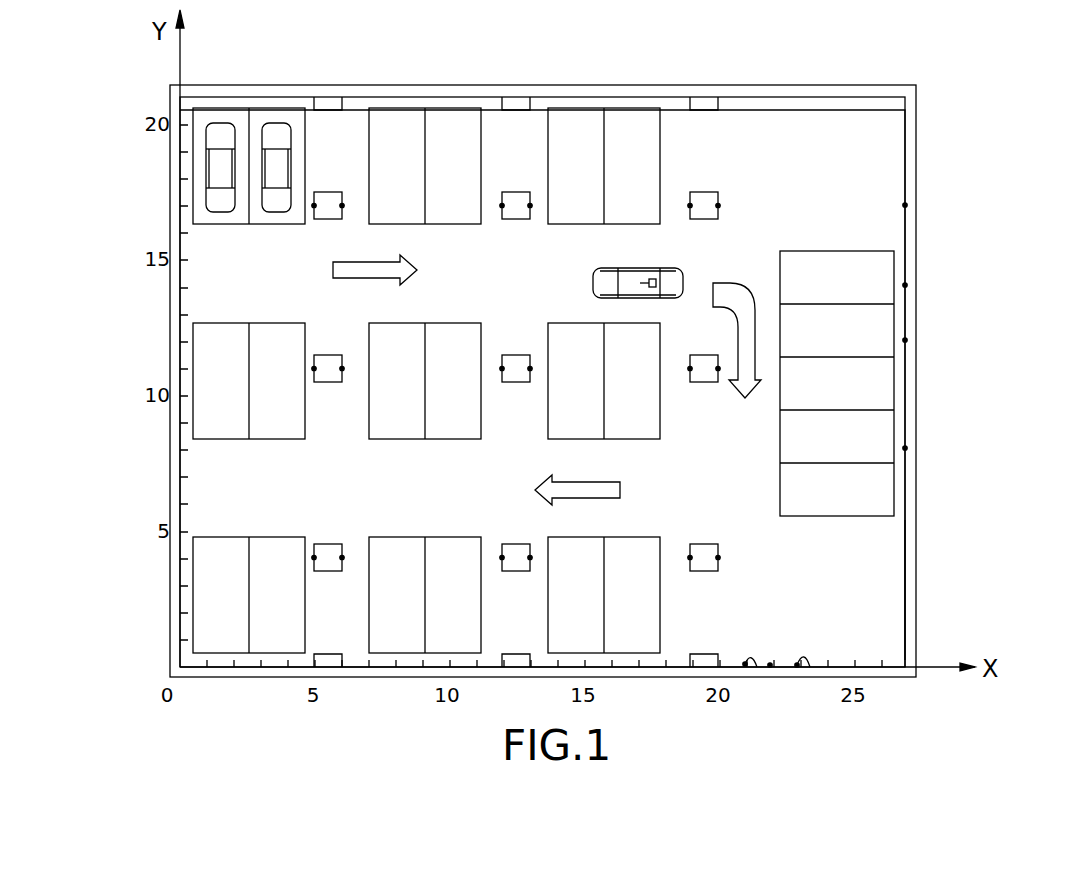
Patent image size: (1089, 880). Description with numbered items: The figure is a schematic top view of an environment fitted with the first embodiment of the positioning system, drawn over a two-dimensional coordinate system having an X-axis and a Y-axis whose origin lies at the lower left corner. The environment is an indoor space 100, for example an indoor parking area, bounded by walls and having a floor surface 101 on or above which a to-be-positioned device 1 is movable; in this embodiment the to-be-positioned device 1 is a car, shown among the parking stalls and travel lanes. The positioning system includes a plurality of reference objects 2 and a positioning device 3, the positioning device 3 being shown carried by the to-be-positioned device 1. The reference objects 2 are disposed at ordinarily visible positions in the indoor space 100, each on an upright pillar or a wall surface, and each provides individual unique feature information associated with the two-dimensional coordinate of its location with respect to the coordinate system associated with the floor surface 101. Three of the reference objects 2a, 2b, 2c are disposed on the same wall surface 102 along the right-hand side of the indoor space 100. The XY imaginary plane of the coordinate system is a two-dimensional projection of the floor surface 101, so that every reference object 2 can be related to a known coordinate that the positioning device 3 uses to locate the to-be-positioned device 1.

The to-be-positioned device 1 is at (636, 280).
The reference object 2 is at (313, 207).
The reference object 2a is at (905, 284).
The reference object 2b is at (905, 204).
The reference object 2c is at (905, 339).
The positioning device 3 is at (633, 293).
The indoor space 100 is at (742, 130).
The floor surface 101 is at (807, 135).
The wall surface 102 is at (903, 562).